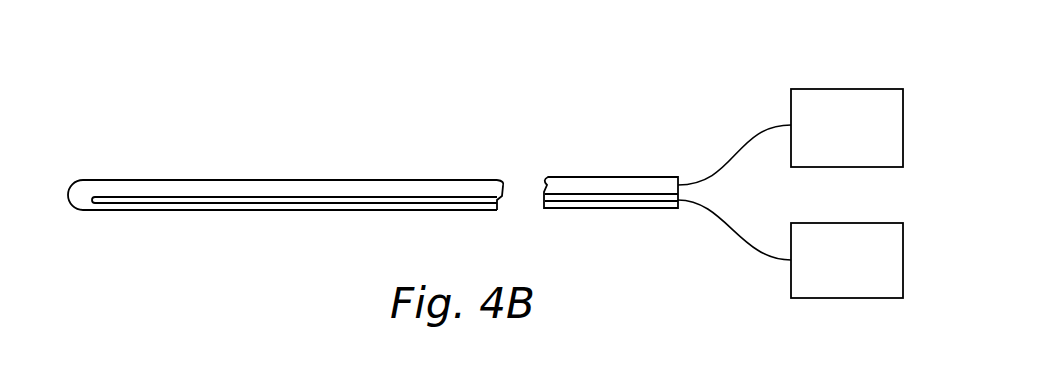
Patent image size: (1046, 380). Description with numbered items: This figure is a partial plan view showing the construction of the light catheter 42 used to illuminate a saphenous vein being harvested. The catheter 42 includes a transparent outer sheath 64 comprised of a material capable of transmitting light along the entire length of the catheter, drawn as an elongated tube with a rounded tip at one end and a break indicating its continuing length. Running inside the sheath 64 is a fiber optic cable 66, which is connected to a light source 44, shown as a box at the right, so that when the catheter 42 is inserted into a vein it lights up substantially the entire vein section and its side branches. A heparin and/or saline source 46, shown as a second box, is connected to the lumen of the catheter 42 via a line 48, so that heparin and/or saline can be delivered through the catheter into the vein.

The light catheter 42 is at (373, 173).
The light source 44 is at (880, 298).
The heparin and/or saline source 46 is at (884, 89).
The line 48 is at (742, 158).
The transparent outer sheath 64 is at (386, 179).
The fiber optic cable 66 is at (323, 200).